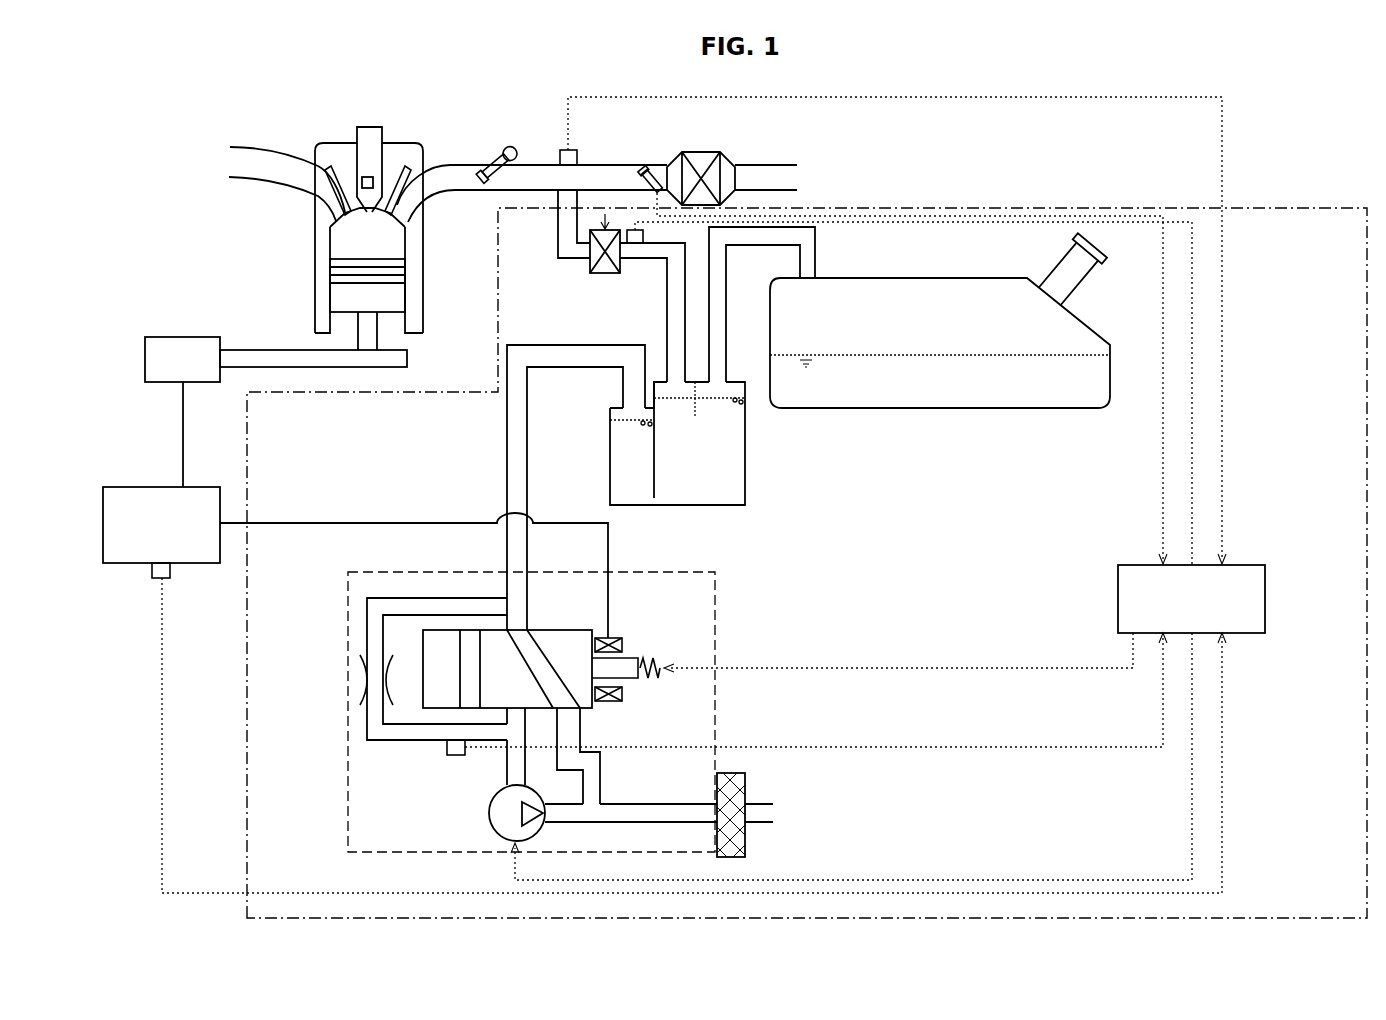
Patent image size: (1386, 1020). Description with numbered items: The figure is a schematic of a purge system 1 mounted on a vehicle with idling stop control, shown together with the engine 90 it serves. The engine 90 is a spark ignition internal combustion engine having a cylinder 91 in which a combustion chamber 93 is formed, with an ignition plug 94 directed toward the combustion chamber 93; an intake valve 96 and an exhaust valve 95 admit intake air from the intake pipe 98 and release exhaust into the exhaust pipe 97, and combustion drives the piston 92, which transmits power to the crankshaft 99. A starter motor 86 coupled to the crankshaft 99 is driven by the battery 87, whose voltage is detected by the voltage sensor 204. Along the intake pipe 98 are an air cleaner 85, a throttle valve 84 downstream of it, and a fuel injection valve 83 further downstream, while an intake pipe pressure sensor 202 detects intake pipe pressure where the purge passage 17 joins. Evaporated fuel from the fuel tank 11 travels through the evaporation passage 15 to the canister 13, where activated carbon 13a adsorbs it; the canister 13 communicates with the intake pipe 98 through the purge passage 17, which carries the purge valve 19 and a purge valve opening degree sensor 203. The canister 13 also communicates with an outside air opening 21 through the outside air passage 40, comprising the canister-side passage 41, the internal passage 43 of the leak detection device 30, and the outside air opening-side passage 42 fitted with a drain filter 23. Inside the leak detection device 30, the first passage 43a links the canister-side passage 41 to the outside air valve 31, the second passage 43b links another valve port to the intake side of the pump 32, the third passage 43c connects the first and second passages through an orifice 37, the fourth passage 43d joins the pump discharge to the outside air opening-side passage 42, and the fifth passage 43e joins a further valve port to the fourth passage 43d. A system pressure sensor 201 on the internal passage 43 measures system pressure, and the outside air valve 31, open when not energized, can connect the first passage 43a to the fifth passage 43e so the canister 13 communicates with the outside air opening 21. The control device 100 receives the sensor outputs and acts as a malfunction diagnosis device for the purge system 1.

The purge system 1 is at (1266, 207).
The fuel tank 11 is at (1040, 410).
The canister 13 is at (737, 508).
The activated carbon 13a is at (740, 462).
The evaporation passage 15 is at (727, 275).
The purge passage 17 is at (667, 300).
The purge valve 19 is at (590, 265).
The outside air opening 21 is at (774, 815).
The drain filter 23 is at (745, 790).
The leak detection device 30 is at (344, 588).
The outside air valve 31 is at (655, 650).
The pump 32 is at (490, 815).
The orifice 37 is at (362, 682).
The outside air passage 40 is at (486, 437).
The canister-side passage 41 is at (507, 472).
The outside air opening-side passage 42 is at (672, 824).
The internal passage 43 is at (394, 595).
The first passage 43a is at (528, 598).
The second passage 43b is at (505, 770).
The third passage 43c is at (366, 628).
The fourth passage 43d is at (565, 824).
The fifth passage 43e is at (582, 735).
The fuel injection valve 83 is at (506, 148).
The throttle valve 84 is at (654, 170).
The air cleaner 85 is at (703, 152).
The starter motor 86 is at (165, 345).
The battery 87 is at (142, 495).
The engine 90 is at (316, 135).
The cylinder 91 is at (318, 295).
The piston 92 is at (406, 272).
The combustion chamber 93 is at (345, 253).
The ignition plug 94 is at (360, 185).
The exhaust valve 95 is at (330, 206).
The intake valve 96 is at (412, 205).
The exhaust pipe 97 is at (253, 145).
The intake pipe 98 is at (458, 163).
The crankshaft 99 is at (407, 358).
The control device 100 is at (1266, 598).
The system pressure sensor 201 is at (447, 748).
The intake pipe pressure sensor 202 is at (565, 149).
The purge valve opening degree sensor 203 is at (630, 230).
The voltage sensor 204 is at (171, 570).